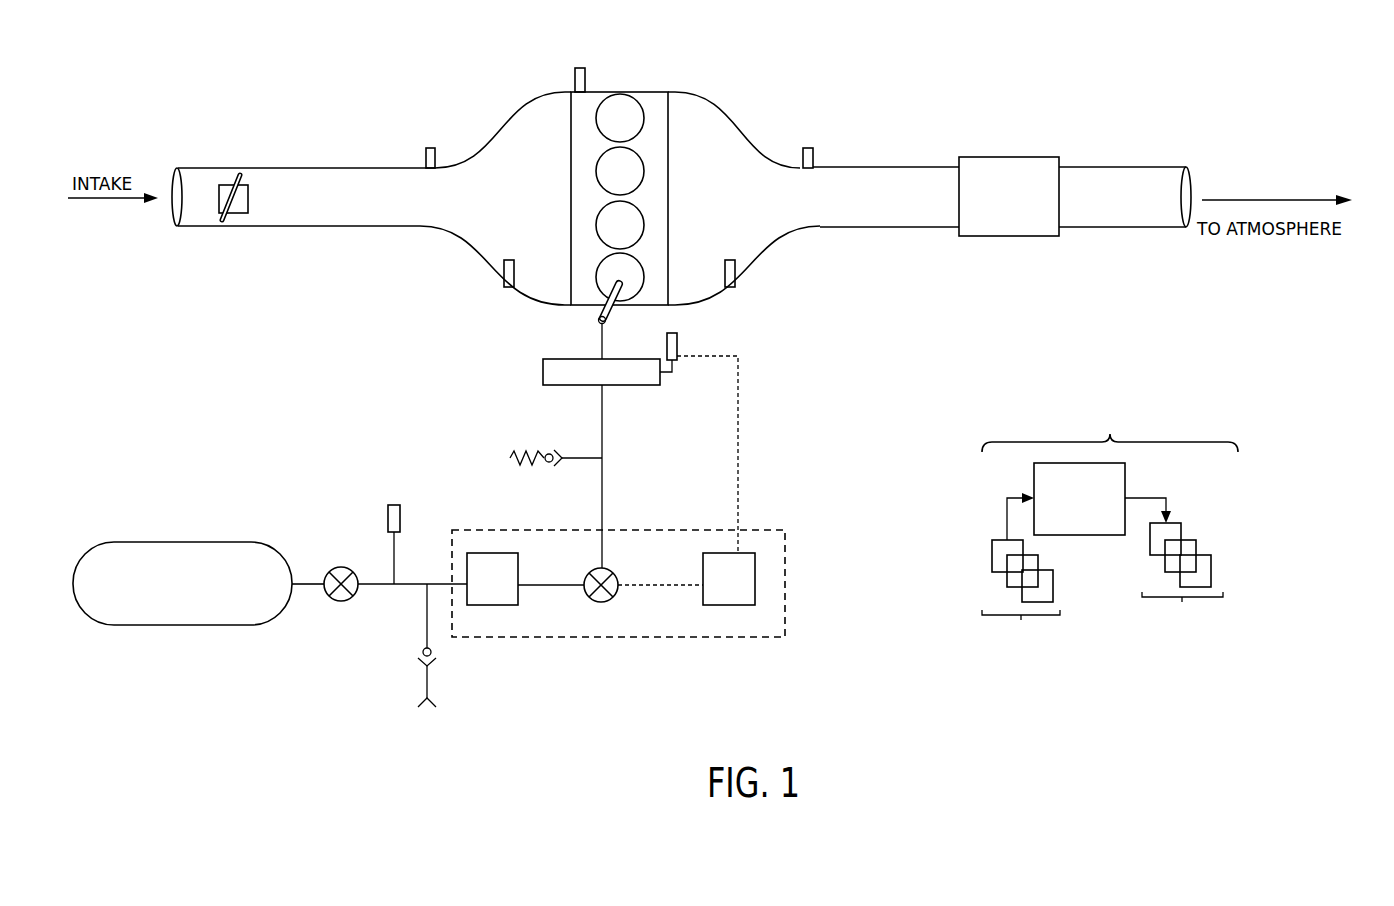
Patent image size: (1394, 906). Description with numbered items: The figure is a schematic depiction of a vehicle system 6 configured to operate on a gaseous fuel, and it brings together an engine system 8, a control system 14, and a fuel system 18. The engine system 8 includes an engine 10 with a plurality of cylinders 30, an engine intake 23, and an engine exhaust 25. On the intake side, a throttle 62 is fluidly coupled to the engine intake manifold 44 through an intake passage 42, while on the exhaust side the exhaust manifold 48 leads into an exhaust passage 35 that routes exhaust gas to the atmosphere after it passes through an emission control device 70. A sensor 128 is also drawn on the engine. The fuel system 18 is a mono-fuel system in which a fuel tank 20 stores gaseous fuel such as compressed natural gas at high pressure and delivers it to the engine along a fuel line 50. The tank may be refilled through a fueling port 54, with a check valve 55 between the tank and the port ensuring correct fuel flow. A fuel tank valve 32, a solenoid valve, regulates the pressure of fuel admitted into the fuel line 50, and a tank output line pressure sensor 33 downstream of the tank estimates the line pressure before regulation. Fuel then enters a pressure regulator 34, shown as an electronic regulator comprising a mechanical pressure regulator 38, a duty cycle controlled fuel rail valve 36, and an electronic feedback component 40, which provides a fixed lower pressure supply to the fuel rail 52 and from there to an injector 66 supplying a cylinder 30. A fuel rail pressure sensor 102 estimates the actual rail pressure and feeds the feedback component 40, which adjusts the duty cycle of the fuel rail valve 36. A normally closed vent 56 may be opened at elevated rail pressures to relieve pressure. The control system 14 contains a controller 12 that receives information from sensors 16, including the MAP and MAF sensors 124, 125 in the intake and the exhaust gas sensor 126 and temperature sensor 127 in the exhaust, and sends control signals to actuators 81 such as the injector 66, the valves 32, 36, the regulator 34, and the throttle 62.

The vehicle system 6 is at (252, 86).
The engine system 8 is at (798, 52).
The engine 10 is at (670, 180).
The controller 12 is at (1079, 499).
The control system 14 is at (1110, 525).
The sensors 16 is at (1021, 578).
The fuel system 18 is at (222, 670).
The fuel tank 20 is at (184, 542).
The engine intake 23 is at (372, 140).
The engine exhaust 25 is at (1014, 98).
The cylinders 30 is at (641, 112).
The fuel tank valve 32 is at (336, 566).
The tank output line pressure sensor 33 is at (398, 503).
The pressure regulator 34 is at (764, 530).
The exhaust passage 35 is at (1138, 167).
The fuel rail valve 36 is at (609, 573).
The mechanical pressure regulator 38 is at (481, 592).
The electronic feedback component 40 is at (718, 592).
The intake passage 42 is at (284, 228).
The engine intake manifold 44 is at (519, 207).
The exhaust manifold 48 is at (727, 207).
The fuel line 50 is at (525, 590).
The fuel rail 52 is at (552, 359).
The fueling port 54 is at (433, 708).
The check valve 55 is at (424, 648).
The vent 56 is at (525, 442).
The throttle 62 is at (248, 206).
The fuel injector 66 is at (610, 314).
The emission control device 70 is at (998, 208).
The actuators 81 is at (1174, 572).
The fuel rail pressure sensor 102 is at (680, 350).
The MAP sensor 124 is at (437, 159).
The MAF sensor 125 is at (503, 270).
The exhaust gas sensor 126 is at (736, 270).
The temperature sensor 127 is at (803, 159).
The engine sensor 128 is at (586, 84).